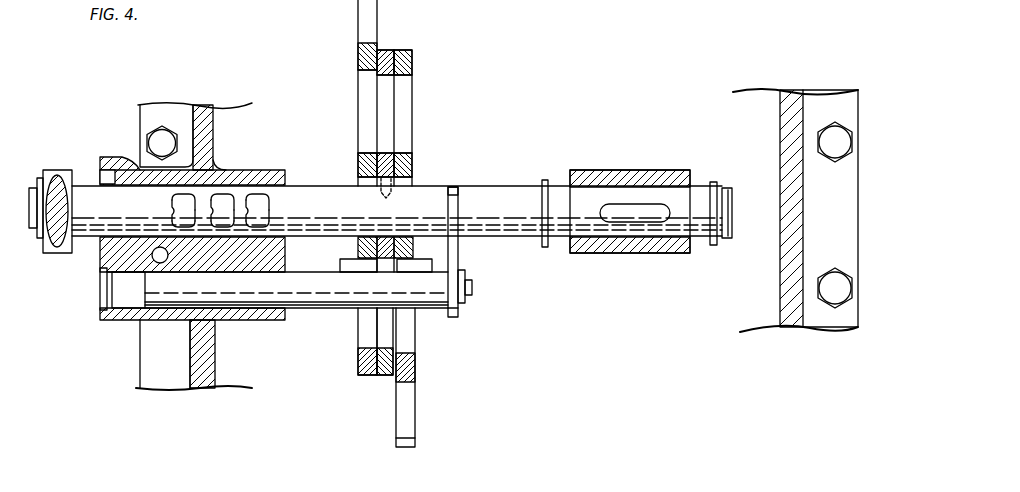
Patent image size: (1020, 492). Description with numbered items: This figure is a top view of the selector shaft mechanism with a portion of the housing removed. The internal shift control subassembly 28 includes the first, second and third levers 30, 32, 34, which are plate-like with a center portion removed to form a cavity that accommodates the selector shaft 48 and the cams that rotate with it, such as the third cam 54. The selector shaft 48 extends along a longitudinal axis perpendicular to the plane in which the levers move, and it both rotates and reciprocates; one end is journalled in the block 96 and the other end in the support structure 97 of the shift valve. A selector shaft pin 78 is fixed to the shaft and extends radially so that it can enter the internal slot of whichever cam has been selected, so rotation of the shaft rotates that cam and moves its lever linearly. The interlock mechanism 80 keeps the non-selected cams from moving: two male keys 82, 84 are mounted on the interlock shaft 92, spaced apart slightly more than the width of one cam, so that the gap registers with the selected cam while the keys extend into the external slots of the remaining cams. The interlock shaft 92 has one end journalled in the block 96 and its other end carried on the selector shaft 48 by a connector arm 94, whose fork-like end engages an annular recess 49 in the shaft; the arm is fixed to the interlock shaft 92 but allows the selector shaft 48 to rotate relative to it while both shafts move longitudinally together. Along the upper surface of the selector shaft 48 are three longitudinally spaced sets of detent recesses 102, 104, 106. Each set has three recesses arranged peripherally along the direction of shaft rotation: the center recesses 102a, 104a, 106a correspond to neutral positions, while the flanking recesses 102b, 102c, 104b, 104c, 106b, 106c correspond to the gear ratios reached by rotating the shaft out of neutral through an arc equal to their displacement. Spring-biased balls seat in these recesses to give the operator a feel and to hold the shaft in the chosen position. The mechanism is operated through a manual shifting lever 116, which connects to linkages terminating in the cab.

The internal shift control subassembly 28 is at (422, 136).
The first lever 30 is at (355, 64).
The second lever 32 is at (383, 49).
The third lever 34 is at (418, 73).
The selector shaft 48 is at (510, 184).
The annular recess 49 is at (454, 184).
The third cam 54 is at (415, 163).
The selector shaft pin 78 is at (379, 183).
The interlock mechanism 80 is at (472, 312).
The male key 82 is at (357, 266).
The male key 84 is at (416, 266).
The interlock shaft 92 is at (310, 290).
The connector arm 94 is at (460, 248).
The block 96 is at (192, 273).
The support structure 97 is at (640, 254).
The first set of recesses 102 is at (158, 205).
The center recess 102a is at (174, 213).
The recess 102b is at (186, 194).
The recess 102c is at (172, 232).
The second set of recesses 104 is at (224, 223).
The center recess 104a is at (222, 214).
The recess 104b is at (224, 194).
The recess 104c is at (215, 229).
The third set of recesses 106 is at (292, 204).
The center recess 106a is at (260, 208).
The recess 106b is at (259, 194).
The recess 106c is at (268, 226).
The manual shifting lever 116 is at (50, 172).